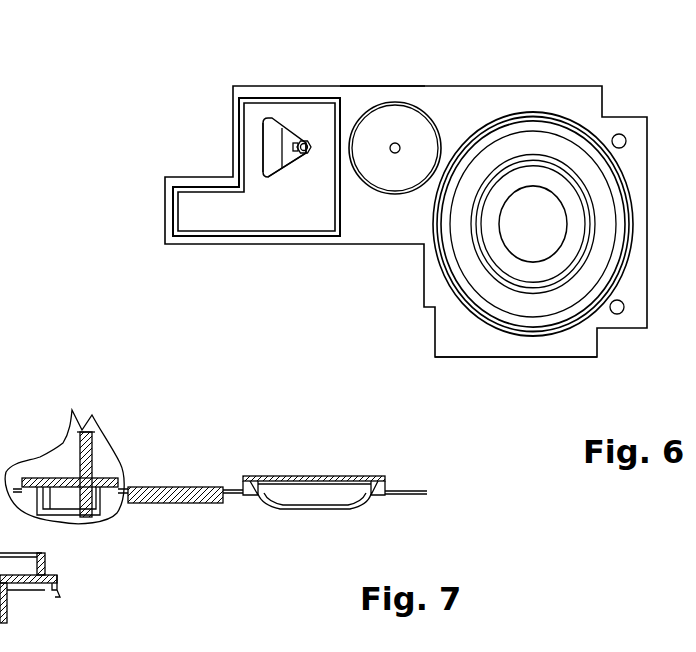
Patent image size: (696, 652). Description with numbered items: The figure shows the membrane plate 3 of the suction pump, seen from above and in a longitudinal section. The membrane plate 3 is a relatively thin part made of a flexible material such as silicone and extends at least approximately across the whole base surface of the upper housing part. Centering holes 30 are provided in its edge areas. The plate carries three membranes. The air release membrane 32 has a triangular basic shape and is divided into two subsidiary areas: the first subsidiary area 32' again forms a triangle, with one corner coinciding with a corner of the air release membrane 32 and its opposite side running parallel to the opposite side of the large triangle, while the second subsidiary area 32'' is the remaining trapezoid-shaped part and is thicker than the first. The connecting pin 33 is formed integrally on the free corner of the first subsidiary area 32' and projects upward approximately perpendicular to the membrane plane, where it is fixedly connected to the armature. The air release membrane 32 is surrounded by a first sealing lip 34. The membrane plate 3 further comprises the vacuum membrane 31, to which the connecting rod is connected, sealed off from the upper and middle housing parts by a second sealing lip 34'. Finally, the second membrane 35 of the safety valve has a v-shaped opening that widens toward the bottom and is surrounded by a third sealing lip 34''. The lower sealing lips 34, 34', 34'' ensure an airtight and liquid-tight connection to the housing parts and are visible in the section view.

In FIG. 6, the membrane plate 3 is at (188, 85).
In FIG. 6, the centering holes 30 is at (620, 134).
In FIG. 6, the vacuum membrane 31 is at (549, 147).
In FIG. 7, the vacuum membrane 31 is at (298, 507).
In FIG. 6, the air release membrane 32 is at (271, 103).
In FIG. 7, the air release membrane 32 is at (66, 487).
In FIG. 6, the first subsidiary area 32' is at (301, 218).
In FIG. 6, the second subsidiary area 32'' is at (222, 143).
In FIG. 6, the connecting pin 33 is at (306, 140).
In FIG. 7, the connecting pin 33 is at (68, 443).
In FIG. 6, the first sealing lip 34 is at (256, 195).
In FIG. 6, the second sealing lip 34' is at (516, 369).
In FIG. 6, the third sealing lip 34'' is at (382, 64).
In FIG. 6, the second membrane 35 is at (424, 128).
In FIG. 7, the second membrane 35 is at (192, 488).